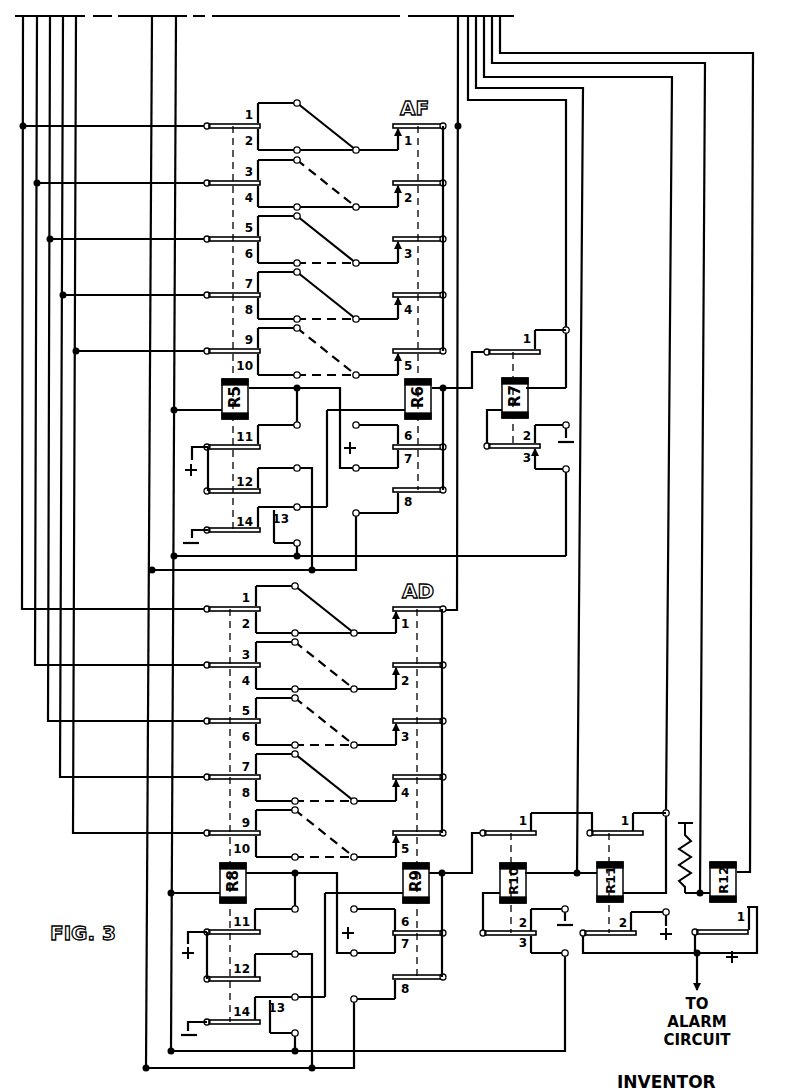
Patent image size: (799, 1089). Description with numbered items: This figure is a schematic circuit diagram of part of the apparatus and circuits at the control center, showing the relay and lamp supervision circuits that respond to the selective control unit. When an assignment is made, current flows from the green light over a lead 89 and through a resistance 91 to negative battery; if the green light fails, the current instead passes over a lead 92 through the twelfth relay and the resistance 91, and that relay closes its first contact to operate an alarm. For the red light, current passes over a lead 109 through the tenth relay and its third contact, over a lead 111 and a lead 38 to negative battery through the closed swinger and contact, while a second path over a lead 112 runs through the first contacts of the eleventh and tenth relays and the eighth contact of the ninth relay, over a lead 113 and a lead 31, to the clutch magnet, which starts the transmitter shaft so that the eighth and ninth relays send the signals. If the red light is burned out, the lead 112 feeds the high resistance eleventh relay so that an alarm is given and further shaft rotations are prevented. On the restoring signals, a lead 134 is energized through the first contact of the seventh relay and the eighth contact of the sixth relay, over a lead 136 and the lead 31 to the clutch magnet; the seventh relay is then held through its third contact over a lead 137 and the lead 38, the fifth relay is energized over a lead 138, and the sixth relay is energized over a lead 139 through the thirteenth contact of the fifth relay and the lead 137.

The lead 31 is at (150, 389).
The lead 38 is at (176, 62).
The lead 89 is at (705, 210).
The resistance 91 is at (690, 859).
The lead 92 is at (752, 340).
The lead 109 is at (583, 215).
The lead 111 is at (382, 1052).
The lead 112 is at (672, 297).
The lead 113 is at (221, 1069).
The lead 134 is at (566, 198).
The lead 136 is at (359, 518).
The lead 137 is at (483, 558).
The lead 138 is at (341, 404).
The lead 139 is at (327, 456).